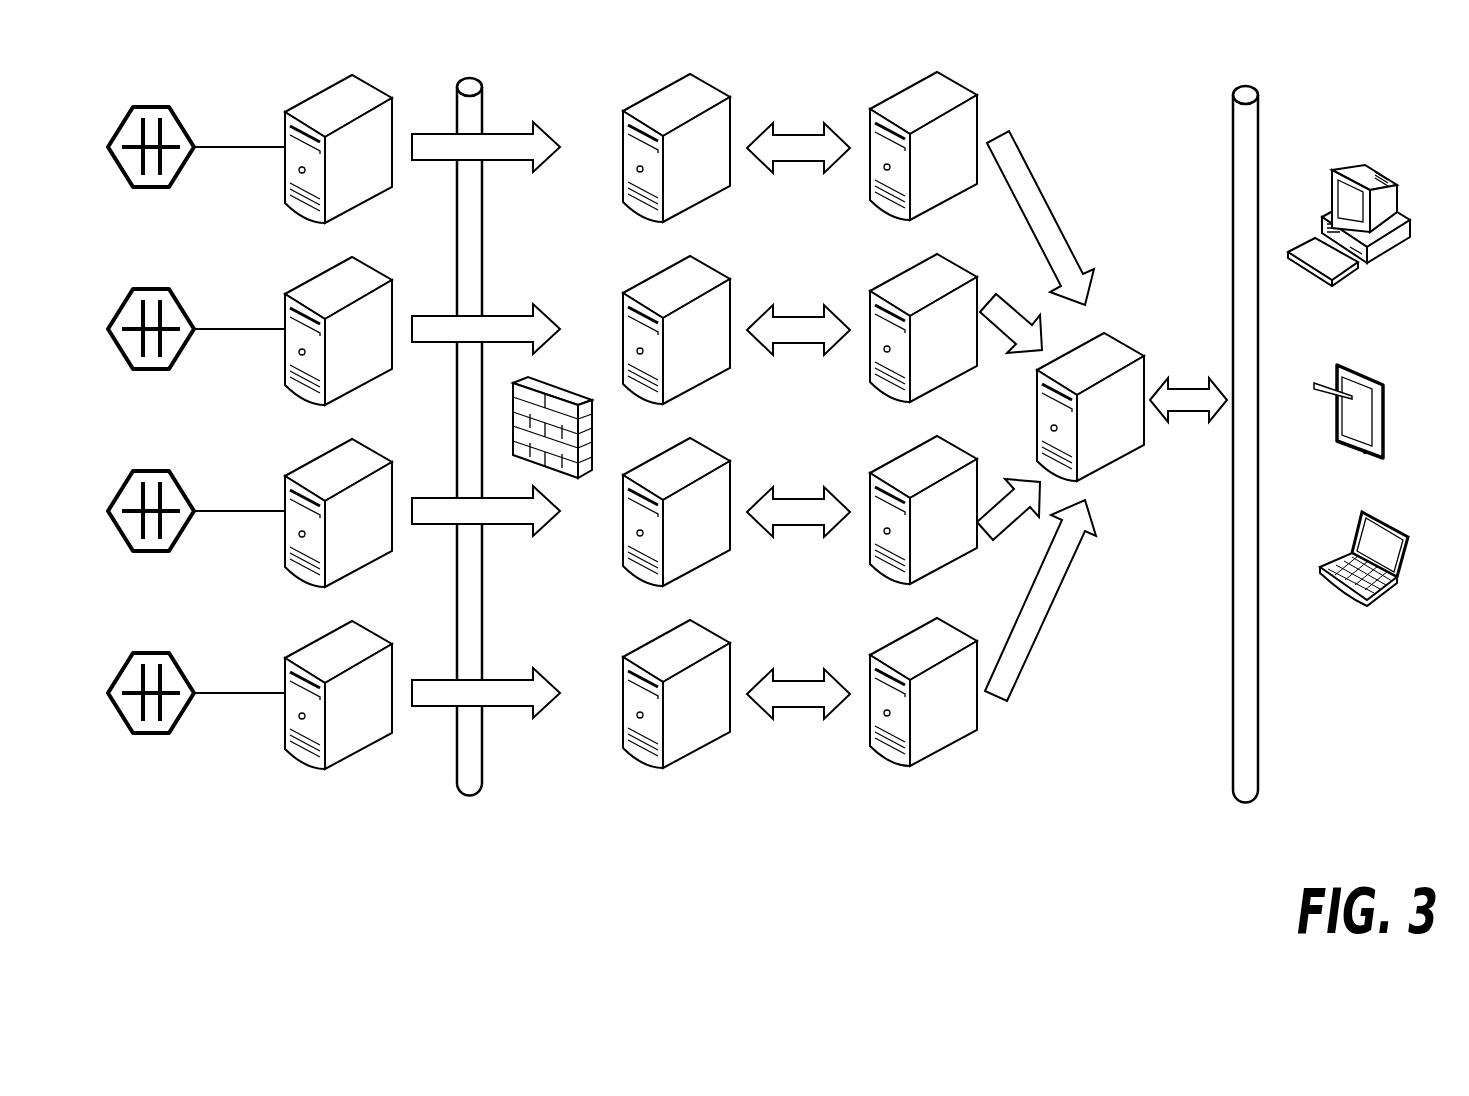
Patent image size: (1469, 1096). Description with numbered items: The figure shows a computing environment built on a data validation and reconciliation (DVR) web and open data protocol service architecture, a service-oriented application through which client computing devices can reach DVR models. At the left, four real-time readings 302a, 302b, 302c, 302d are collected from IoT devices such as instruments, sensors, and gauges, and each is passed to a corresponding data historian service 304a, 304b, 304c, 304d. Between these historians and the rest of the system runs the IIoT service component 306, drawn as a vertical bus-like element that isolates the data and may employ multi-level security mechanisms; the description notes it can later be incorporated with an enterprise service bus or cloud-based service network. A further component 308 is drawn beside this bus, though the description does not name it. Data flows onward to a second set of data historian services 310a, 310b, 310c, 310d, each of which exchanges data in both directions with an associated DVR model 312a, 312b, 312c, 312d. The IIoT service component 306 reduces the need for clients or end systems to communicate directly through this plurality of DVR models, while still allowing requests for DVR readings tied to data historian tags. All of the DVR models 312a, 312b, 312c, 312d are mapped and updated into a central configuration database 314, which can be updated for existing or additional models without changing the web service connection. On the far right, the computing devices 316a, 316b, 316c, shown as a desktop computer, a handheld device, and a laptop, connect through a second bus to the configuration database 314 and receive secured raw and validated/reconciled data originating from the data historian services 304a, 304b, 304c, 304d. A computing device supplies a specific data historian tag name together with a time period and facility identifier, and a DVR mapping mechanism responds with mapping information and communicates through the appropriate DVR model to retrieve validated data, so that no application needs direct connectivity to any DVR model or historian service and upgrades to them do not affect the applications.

The real-time reading 302a is at (168, 92).
The real-time reading 302b is at (165, 275).
The real-time reading 302c is at (163, 458).
The real-time reading 302d is at (165, 640).
The data historian service 304a is at (372, 60).
The data historian service 304b is at (370, 248).
The data historian service 304c is at (373, 432).
The data historian service 304d is at (362, 613).
The IIoT service component 306 is at (487, 72).
The firewall 308 is at (556, 386).
The data historian service 310a is at (712, 72).
The data historian service 310b is at (712, 248).
The data historian service 310c is at (710, 430).
The data historian service 310d is at (713, 615).
The DVR model 312a is at (892, 70).
The DVR model 312b is at (882, 248).
The DVR model 312c is at (886, 432).
The DVR model 312d is at (882, 615).
The configuration database 314 is at (1140, 325).
The computing device 316a is at (1390, 165).
The computing device 316b is at (1377, 357).
The computing device 316c is at (1394, 510).